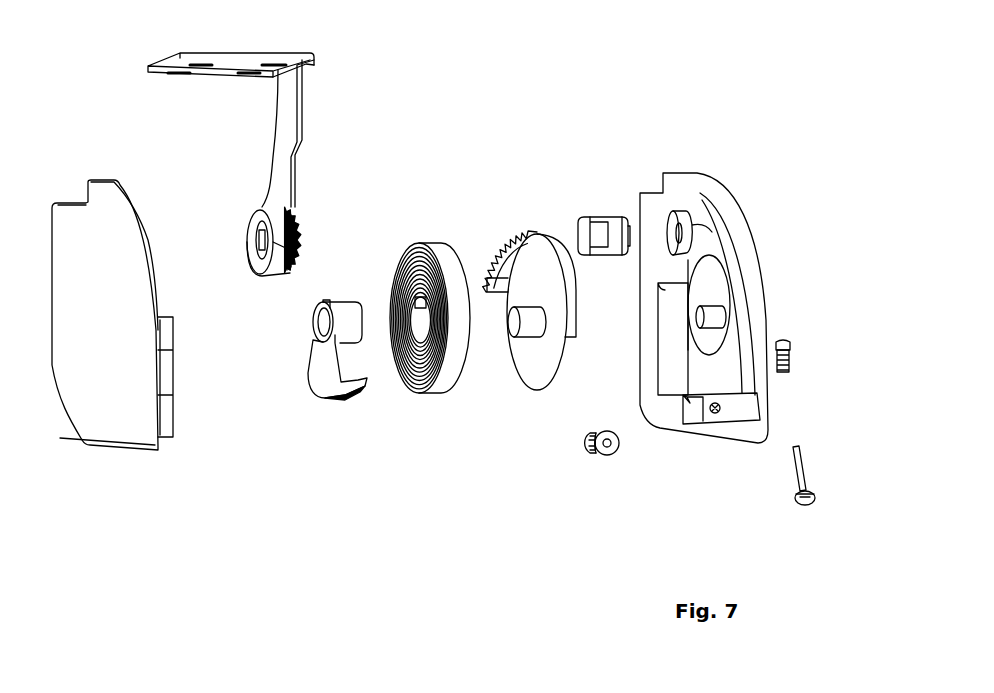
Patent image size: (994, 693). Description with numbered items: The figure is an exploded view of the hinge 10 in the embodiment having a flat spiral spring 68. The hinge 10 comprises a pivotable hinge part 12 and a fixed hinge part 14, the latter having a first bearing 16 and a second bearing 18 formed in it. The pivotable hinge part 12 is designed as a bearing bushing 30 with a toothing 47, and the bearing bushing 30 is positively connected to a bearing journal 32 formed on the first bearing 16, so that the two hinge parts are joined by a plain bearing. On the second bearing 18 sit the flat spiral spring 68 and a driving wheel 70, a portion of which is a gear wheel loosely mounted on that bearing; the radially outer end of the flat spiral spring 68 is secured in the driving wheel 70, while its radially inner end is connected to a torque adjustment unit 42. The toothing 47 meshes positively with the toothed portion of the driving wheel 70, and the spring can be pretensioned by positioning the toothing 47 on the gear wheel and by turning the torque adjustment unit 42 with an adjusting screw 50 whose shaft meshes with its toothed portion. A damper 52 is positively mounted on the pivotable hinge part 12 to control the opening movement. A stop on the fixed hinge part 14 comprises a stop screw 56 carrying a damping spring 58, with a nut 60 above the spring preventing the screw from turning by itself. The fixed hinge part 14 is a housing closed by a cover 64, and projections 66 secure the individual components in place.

The hinge 10 is at (74, 44).
The pivotable hinge part 12 is at (278, 217).
The fixed hinge part 14 is at (689, 307).
The first bearing 16 is at (669, 208).
The second bearing 18 is at (662, 330).
The bearing bushing 30 is at (302, 233).
The bearing journal 32 is at (713, 297).
The torque adjustment unit 42 is at (322, 370).
The toothing 47 is at (290, 275).
The adjusting screw 50 is at (588, 450).
The damper 52 is at (600, 213).
The stop screw 56 is at (790, 482).
The damping spring 58 is at (790, 366).
The nut 60 is at (778, 340).
The cover 64 is at (90, 423).
The projections 66 is at (670, 393).
The flat spiral spring 68 is at (450, 390).
The driving wheel 70 is at (524, 353).